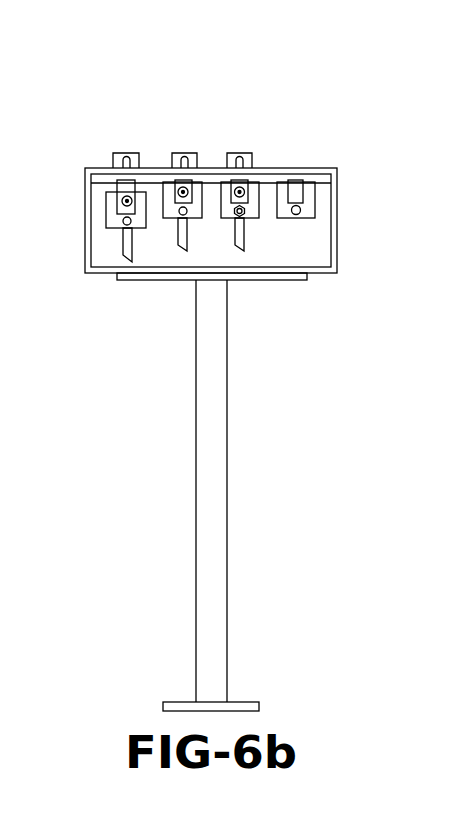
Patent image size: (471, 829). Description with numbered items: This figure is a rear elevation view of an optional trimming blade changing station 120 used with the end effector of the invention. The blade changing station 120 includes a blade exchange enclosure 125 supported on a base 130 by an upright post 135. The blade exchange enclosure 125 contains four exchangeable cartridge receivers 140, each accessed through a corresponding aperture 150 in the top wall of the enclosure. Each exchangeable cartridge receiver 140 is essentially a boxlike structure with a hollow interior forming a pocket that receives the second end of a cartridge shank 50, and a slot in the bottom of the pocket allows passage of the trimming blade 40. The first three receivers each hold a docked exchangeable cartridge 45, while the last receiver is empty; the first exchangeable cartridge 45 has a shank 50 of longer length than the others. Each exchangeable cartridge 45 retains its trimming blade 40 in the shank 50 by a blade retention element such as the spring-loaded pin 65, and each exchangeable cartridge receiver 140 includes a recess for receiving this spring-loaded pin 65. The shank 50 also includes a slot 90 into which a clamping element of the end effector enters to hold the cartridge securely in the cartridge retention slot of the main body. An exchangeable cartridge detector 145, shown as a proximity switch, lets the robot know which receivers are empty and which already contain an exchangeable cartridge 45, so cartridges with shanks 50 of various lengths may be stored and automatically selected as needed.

The trimming blade changing station 120 is at (424, 129).
The blade exchange enclosure 125 is at (89, 238).
The exchangeable cartridge receiver 140 is at (329, 208).
The upright post 135 is at (217, 408).
The base 130 is at (245, 701).
The exchangeable trimming blade cartridge 45 is at (107, 146).
The shank 50 is at (232, 158).
The slot 90 is at (240, 160).
The spring-loaded pin 65 is at (182, 190).
The exchangeable cartridge detector 145 is at (243, 211).
The trimming blade 40 is at (242, 232).
The aperture 150 is at (303, 184).